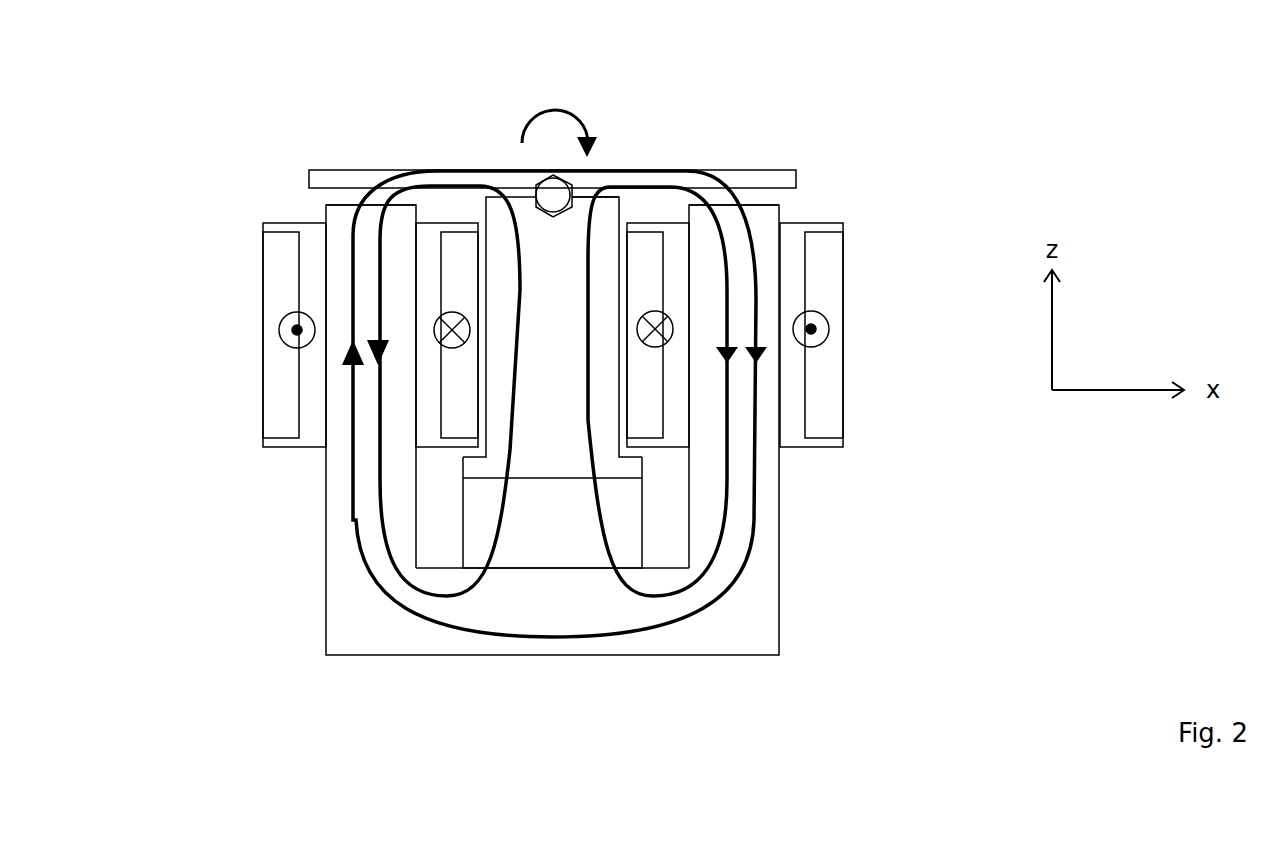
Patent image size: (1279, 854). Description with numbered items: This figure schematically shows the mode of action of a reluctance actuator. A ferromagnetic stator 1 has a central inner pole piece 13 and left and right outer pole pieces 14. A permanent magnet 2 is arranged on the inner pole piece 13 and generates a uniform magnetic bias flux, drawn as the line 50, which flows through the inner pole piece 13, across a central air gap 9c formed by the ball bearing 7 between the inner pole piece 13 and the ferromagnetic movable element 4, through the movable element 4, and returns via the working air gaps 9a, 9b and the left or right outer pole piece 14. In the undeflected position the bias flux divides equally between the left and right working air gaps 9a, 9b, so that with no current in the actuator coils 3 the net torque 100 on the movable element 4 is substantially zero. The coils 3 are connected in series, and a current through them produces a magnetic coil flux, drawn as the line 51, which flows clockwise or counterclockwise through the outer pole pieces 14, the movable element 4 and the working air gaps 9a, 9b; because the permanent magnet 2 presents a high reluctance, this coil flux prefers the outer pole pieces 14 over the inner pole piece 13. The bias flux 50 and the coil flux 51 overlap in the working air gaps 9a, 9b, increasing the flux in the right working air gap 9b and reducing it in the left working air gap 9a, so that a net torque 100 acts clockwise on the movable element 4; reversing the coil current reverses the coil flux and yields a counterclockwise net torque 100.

The stator 1 is at (752, 633).
The permanent magnet 2 is at (571, 520).
The actuator coils 3 is at (823, 388).
The movable element 4 is at (767, 177).
The ball bearing 7 is at (552, 195).
The left working air gap 9a is at (310, 202).
The right working air gap 9b is at (787, 203).
The central air gap 9c is at (590, 190).
The inner pole piece 13 is at (545, 418).
The outer pole piece 14 is at (337, 483).
The uniform magnetic bias flux 50 is at (707, 565).
The magnetic coil flux 51 is at (363, 560).
The net torque 100 is at (570, 110).